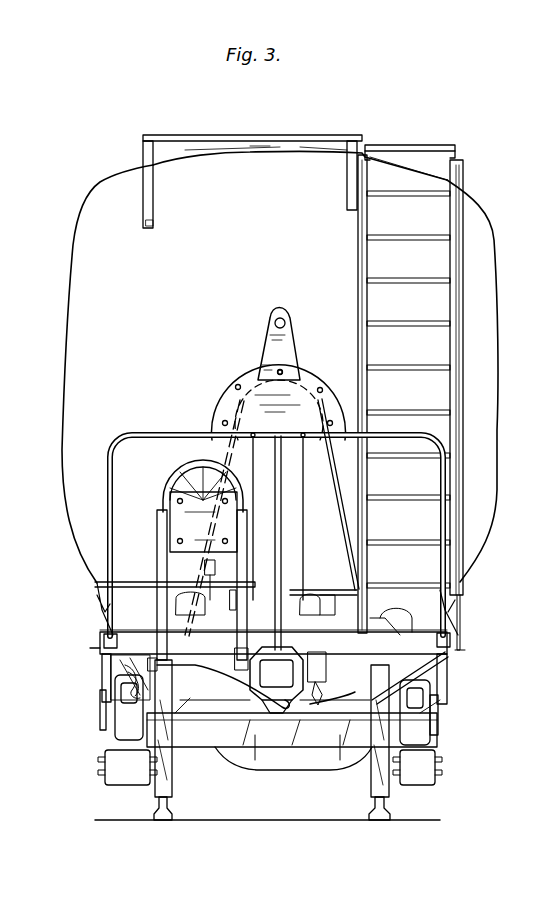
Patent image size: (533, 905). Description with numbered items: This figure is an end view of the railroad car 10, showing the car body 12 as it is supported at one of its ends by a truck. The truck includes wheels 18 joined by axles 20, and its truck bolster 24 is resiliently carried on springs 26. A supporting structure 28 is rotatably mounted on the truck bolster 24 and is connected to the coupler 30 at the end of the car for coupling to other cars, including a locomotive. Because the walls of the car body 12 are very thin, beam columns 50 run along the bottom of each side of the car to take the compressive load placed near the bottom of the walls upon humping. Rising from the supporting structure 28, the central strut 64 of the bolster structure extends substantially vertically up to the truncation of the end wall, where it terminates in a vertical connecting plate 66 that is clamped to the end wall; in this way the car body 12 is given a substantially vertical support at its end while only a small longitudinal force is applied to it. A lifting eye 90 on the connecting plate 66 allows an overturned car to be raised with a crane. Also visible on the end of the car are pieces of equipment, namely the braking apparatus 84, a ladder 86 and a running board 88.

The railroad car 10 is at (123, 120).
The car body 12 is at (105, 182).
The wheels 18 is at (155, 793).
The axles 20 is at (338, 732).
The truck bolsters 24 is at (315, 715).
The springs 26 is at (436, 765).
The supporting structure 28 is at (352, 702).
The coupler 30 is at (257, 690).
The beam columns 50 is at (93, 607).
The central strut 64 is at (296, 550).
The connecting plate 66 is at (236, 383).
The braking apparatus 84 is at (176, 454).
The ladder 86 is at (460, 203).
The running board 88 is at (420, 145).
The lifting eye 90 is at (286, 308).